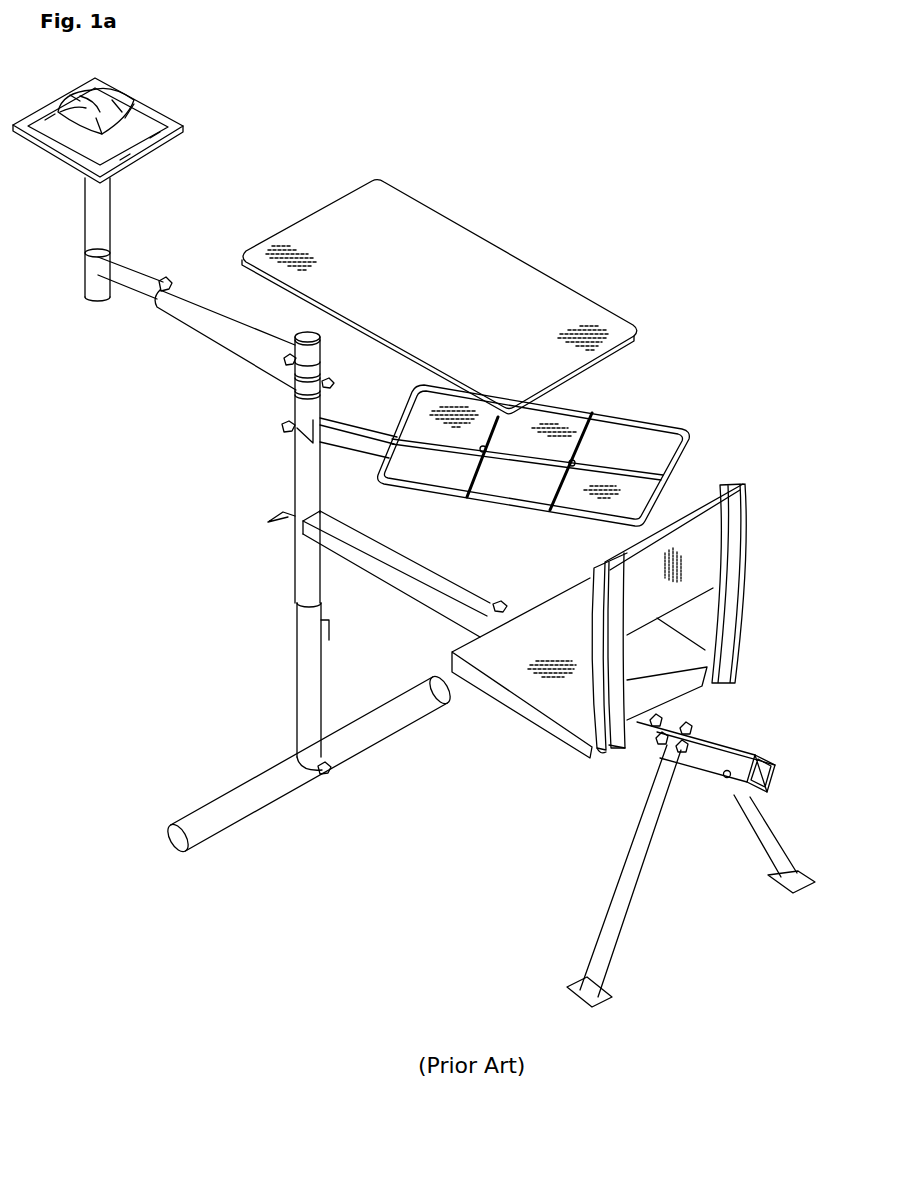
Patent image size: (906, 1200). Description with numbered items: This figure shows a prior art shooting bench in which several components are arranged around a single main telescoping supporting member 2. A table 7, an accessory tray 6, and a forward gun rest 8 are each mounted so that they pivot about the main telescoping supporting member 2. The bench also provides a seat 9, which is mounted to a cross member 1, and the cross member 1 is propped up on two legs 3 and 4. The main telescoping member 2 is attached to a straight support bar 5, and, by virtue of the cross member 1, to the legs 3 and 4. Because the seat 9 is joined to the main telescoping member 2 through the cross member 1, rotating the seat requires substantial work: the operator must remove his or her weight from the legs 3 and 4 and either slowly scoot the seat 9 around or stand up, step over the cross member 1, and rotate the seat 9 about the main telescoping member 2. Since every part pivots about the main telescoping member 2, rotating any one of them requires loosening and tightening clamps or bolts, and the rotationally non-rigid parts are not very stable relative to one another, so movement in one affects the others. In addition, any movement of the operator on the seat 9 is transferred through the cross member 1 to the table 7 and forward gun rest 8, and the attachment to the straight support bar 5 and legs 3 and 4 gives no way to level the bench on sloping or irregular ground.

The cross member 1 is at (413, 566).
The main telescoping supporting member 2 is at (302, 582).
The leg 3 is at (610, 942).
The leg 4 is at (777, 850).
The straight support bar 5 is at (210, 825).
The accessory tray 6 is at (655, 432).
The table 7 is at (378, 192).
The forward gun rest 8 is at (130, 82).
The seat 9 is at (548, 720).